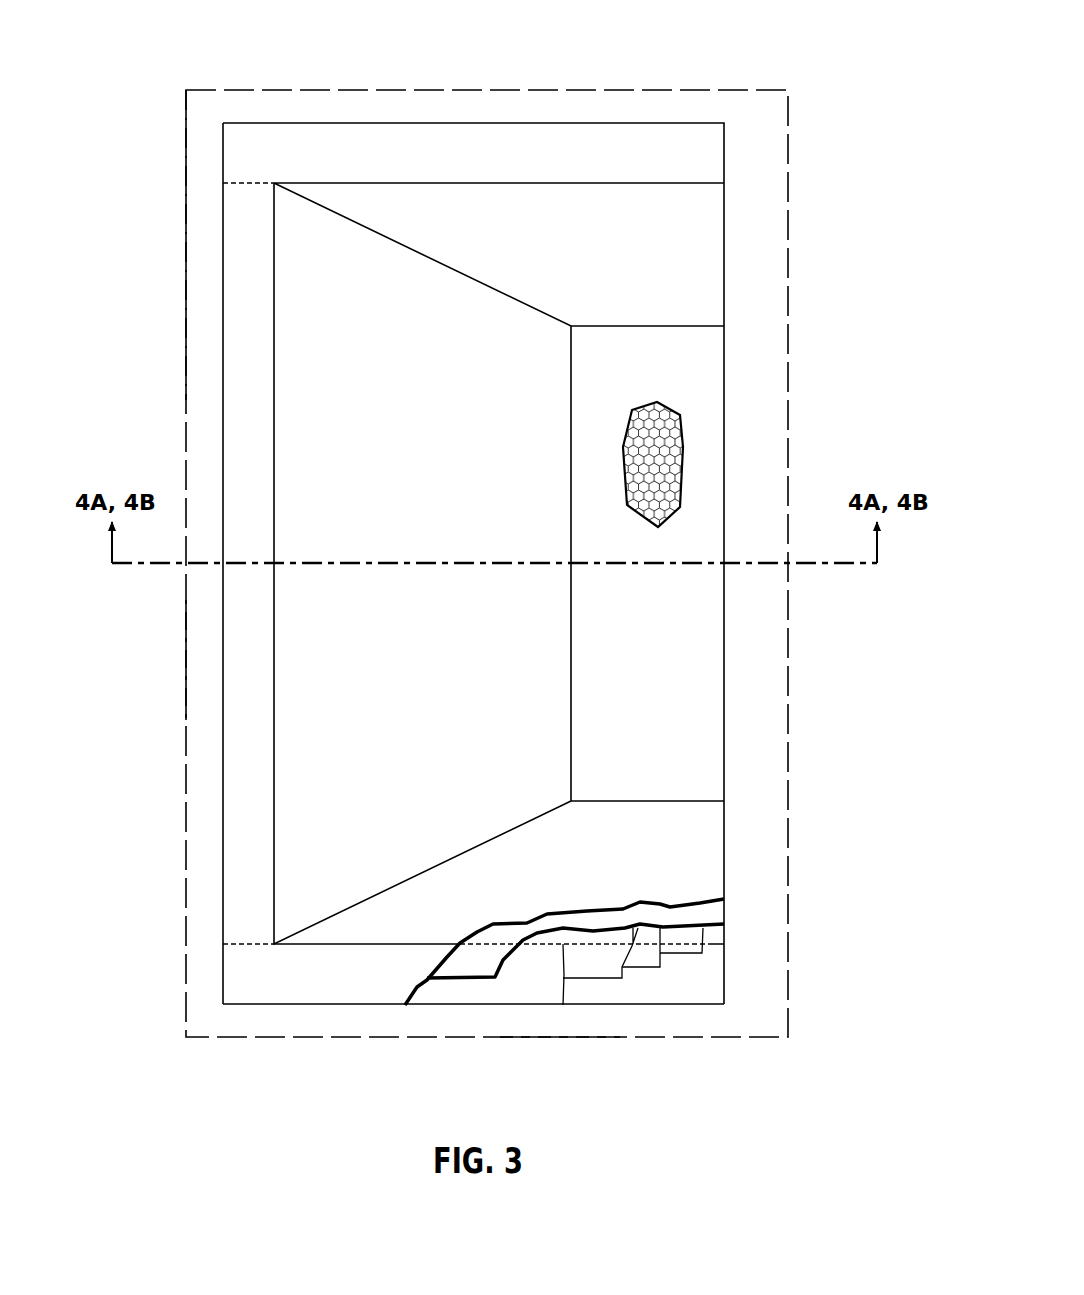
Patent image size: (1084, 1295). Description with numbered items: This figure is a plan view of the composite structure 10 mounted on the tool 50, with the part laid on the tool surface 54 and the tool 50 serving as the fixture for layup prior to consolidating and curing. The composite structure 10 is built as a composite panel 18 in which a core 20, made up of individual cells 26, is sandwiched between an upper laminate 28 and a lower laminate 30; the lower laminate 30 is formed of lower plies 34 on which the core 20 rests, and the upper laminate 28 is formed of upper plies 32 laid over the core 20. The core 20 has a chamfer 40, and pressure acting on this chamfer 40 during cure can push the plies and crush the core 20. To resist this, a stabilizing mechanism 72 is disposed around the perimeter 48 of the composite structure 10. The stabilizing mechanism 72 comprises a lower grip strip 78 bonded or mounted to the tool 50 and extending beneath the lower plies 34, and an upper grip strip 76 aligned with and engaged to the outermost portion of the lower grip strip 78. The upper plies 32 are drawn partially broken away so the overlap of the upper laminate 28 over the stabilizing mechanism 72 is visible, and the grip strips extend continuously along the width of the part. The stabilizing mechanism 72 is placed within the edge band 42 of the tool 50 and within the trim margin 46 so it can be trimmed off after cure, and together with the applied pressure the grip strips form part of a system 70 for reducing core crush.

The composite structure 10 is at (517, 524).
The composite panel 18 is at (517, 524).
The system for reducing core crush 70 is at (694, 66).
The tool surface 54 is at (200, 380).
The tool 50 is at (186, 666).
The perimeter 48 is at (224, 802).
The lower laminate 30 is at (554, 251).
The lower plies 34 is at (704, 204).
The upper laminate 28 is at (728, 563).
The upper plies 32 is at (700, 349).
The core 20 is at (750, 461).
The cells 26 is at (668, 425).
The chamfer 40 is at (622, 255).
The trim margin 46 is at (473, 1019).
The edge band 42 is at (355, 1000).
The upper grip strip 76 is at (487, 993).
The lower grip strip 78 is at (647, 987).
The stabilizing mechanism 72 is at (553, 1028).